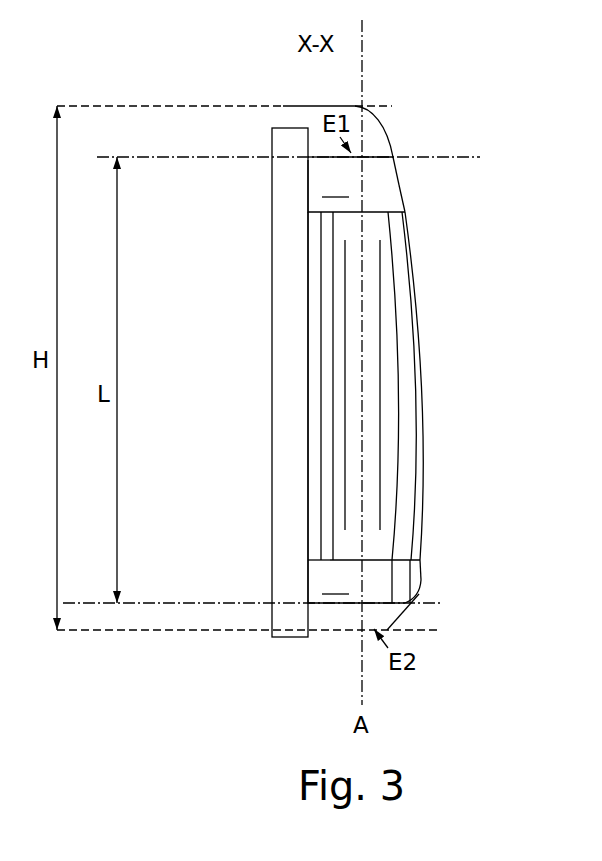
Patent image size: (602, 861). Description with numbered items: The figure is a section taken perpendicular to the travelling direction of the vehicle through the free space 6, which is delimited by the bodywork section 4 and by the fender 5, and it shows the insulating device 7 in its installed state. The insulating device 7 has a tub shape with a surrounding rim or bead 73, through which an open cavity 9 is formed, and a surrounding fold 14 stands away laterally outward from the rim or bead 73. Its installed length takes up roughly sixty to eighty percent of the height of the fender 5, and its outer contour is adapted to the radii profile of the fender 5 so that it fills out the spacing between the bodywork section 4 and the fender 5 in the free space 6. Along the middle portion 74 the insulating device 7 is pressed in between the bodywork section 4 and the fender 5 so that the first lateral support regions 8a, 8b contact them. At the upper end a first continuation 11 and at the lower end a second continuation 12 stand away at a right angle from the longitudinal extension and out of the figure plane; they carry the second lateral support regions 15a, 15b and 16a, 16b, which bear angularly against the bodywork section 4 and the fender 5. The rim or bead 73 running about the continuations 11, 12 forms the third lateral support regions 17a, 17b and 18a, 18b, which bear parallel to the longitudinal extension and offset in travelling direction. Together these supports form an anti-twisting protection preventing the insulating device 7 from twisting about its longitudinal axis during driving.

The bodywork section 4 is at (289, 253).
The fender 5 is at (415, 255).
The free space 6 is at (336, 618).
The insulating device 7 is at (393, 449).
The first lateral support region 8a is at (307, 320).
The first lateral support region 8b is at (428, 378).
The open cavity 9 is at (377, 323).
The middle portion 74 is at (377, 323).
The first continuation 11 is at (382, 168).
The second continuation 12 is at (391, 593).
The fold 14 is at (315, 365).
The second lateral support region 15a is at (307, 153).
The second lateral support region 15b is at (400, 151).
The second lateral support region 16a is at (305, 600).
The second lateral support region 16b is at (419, 596).
The third lateral support region 17a is at (307, 182).
The third lateral support region 17b is at (404, 185).
The third lateral support region 18a is at (305, 573).
The third lateral support region 18b is at (427, 570).
The surrounding rim or bead 73 is at (330, 413).